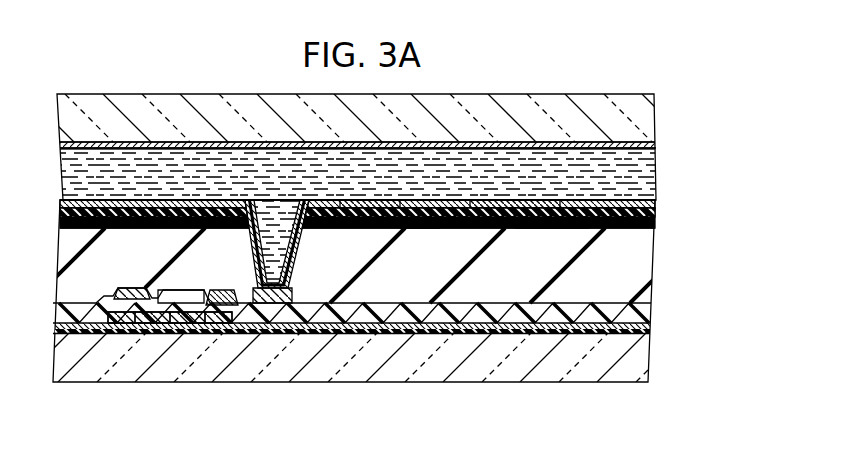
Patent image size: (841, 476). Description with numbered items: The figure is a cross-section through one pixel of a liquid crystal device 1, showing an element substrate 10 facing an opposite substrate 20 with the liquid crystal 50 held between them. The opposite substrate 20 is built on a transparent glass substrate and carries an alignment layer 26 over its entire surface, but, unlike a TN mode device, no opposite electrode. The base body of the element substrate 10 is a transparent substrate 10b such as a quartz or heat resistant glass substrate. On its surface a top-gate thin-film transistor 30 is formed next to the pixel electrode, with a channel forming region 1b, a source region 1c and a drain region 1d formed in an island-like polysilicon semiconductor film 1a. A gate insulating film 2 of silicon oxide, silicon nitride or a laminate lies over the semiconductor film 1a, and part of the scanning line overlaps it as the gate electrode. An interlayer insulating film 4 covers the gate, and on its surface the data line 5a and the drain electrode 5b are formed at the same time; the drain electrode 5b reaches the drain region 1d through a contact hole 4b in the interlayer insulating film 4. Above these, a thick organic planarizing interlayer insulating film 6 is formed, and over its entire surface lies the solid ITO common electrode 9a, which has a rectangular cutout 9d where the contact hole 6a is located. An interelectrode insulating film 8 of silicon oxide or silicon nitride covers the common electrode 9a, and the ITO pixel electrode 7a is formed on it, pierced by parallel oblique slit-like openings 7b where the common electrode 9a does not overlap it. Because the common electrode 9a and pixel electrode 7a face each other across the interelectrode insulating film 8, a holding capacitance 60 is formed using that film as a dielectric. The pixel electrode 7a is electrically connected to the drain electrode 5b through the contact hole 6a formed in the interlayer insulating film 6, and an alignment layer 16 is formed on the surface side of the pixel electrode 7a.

The liquid crystal display device 1 is at (586, 74).
The opposite substrate 20 is at (663, 94).
The liquid crystal layer 50 is at (663, 148).
The alignment layer 26 is at (186, 148).
The alignment layer 16 is at (656, 204).
The pixel electrode 7a is at (372, 204).
The slit-like opening 7b is at (548, 202).
The interelectrode insulating film 8 is at (655, 214).
The common electrode 9a is at (418, 228).
The rectangular cutout 9d is at (306, 230).
The holding capacitance 60 is at (575, 234).
The interlayer insulating film 6 is at (660, 301).
The contact hole 6a is at (276, 214).
The interlayer insulating film 4 is at (651, 315).
The data line 5a is at (132, 287).
The drain electrode 5b is at (207, 288).
The contact hole 4b is at (233, 290).
The gate insulating film 2 is at (649, 328).
The thin-film transistor 30 is at (162, 349).
The semiconductor film 1a is at (192, 341).
The channel forming region 1b is at (173, 333).
The source region 1c is at (115, 333).
The drain region 1d is at (232, 333).
The transparent substrate 10b is at (660, 331).
The element substrate 10 is at (706, 382).